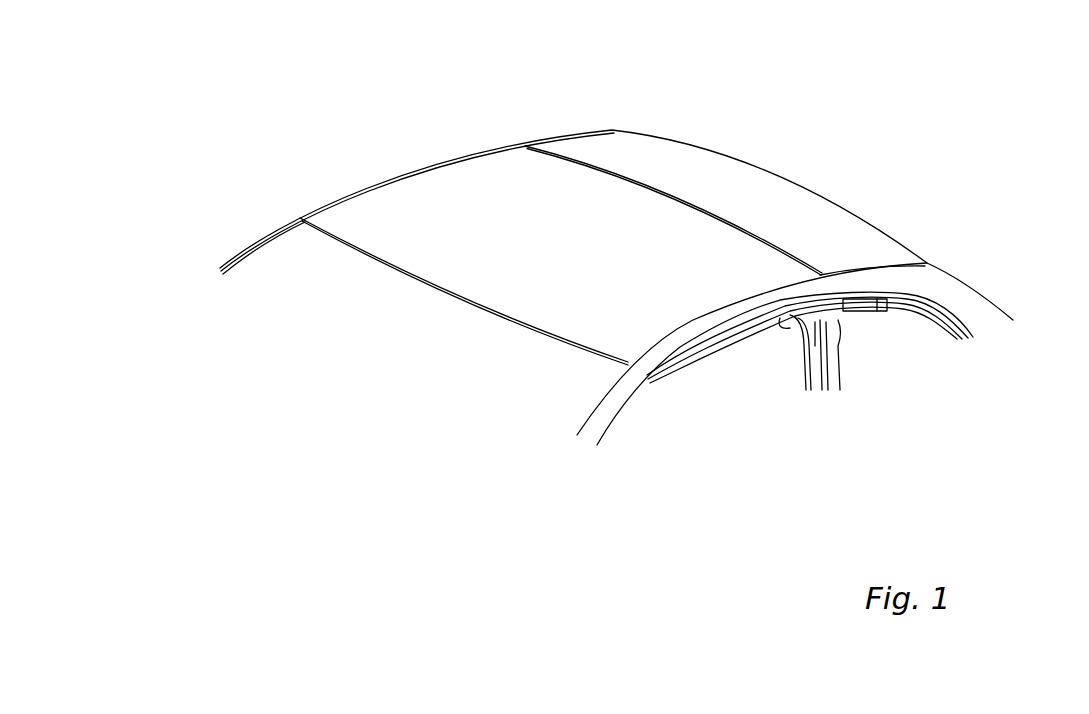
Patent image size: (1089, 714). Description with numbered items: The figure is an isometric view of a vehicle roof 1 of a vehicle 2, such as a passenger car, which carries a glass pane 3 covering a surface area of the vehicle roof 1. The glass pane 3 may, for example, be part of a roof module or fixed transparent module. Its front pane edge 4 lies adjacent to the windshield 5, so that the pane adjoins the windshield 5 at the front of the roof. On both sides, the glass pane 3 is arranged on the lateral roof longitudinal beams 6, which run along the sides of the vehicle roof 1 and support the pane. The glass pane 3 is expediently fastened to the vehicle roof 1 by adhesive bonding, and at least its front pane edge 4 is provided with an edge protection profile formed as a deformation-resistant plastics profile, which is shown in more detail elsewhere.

The vehicle roof 1 is at (437, 157).
The vehicle 2 is at (231, 236).
The glass pane 3 is at (522, 225).
The front pane edge 4 is at (457, 297).
The windshield 5 is at (508, 380).
The lateral roof longitudinal beams 6 is at (373, 183).